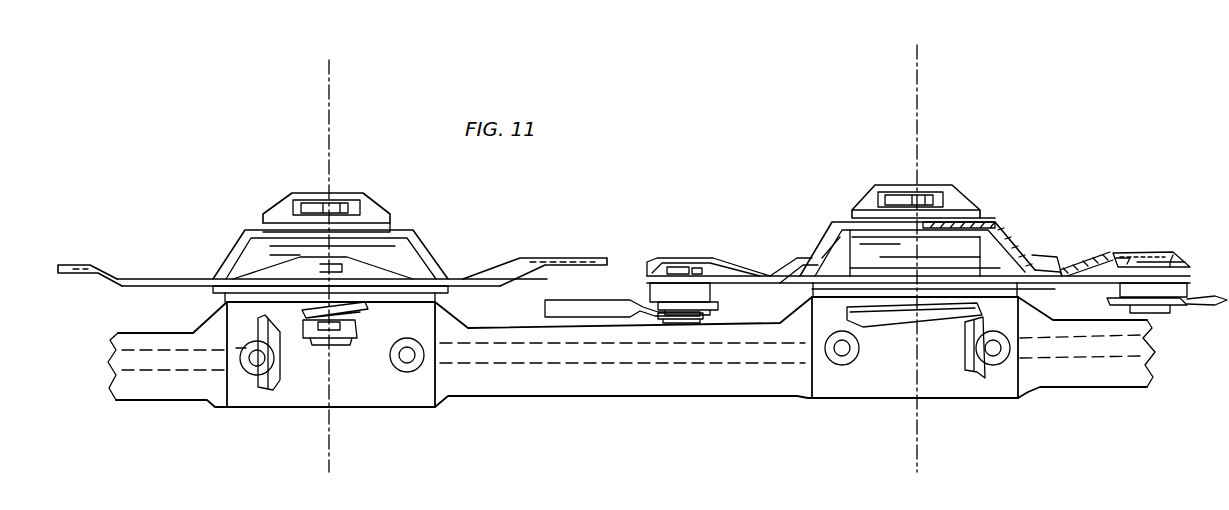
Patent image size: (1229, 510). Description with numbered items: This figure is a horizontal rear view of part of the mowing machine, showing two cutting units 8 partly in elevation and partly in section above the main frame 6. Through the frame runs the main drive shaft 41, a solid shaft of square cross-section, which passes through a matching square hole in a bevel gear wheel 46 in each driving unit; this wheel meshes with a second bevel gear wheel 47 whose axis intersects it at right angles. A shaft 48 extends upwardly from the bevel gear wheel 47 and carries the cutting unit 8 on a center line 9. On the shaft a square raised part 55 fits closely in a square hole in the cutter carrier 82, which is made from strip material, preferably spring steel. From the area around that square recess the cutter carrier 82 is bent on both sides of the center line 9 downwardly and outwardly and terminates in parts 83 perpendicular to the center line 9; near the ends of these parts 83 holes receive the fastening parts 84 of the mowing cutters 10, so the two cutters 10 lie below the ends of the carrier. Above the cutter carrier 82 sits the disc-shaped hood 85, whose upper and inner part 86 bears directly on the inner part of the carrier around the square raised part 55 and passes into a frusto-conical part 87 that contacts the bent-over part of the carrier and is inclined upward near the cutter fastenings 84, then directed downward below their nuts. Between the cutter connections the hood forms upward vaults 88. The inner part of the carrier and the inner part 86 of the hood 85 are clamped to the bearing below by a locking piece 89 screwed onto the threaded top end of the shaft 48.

The main frame 6 is at (587, 411).
The cutting unit 8 is at (686, 235).
The center line 9 is at (328, 118).
The mowing cutter 10 is at (304, 340).
The main drive shaft 41 is at (593, 370).
The bevel gear wheel 46 is at (273, 393).
The bevel gear wheel 47 is at (440, 312).
The shaft 48 is at (335, 192).
The square raised part 55 is at (300, 236).
The cutter carrier 82 is at (211, 296).
The part of the cutter carrier 83 is at (1052, 289).
The fastening part 84 is at (348, 343).
The hood 85 is at (441, 256).
The upper and inner part of the hood 86 is at (995, 221).
The frusto-conical part 87 is at (822, 235).
The upward vault 88 is at (78, 265).
The locking piece 89 is at (393, 209).